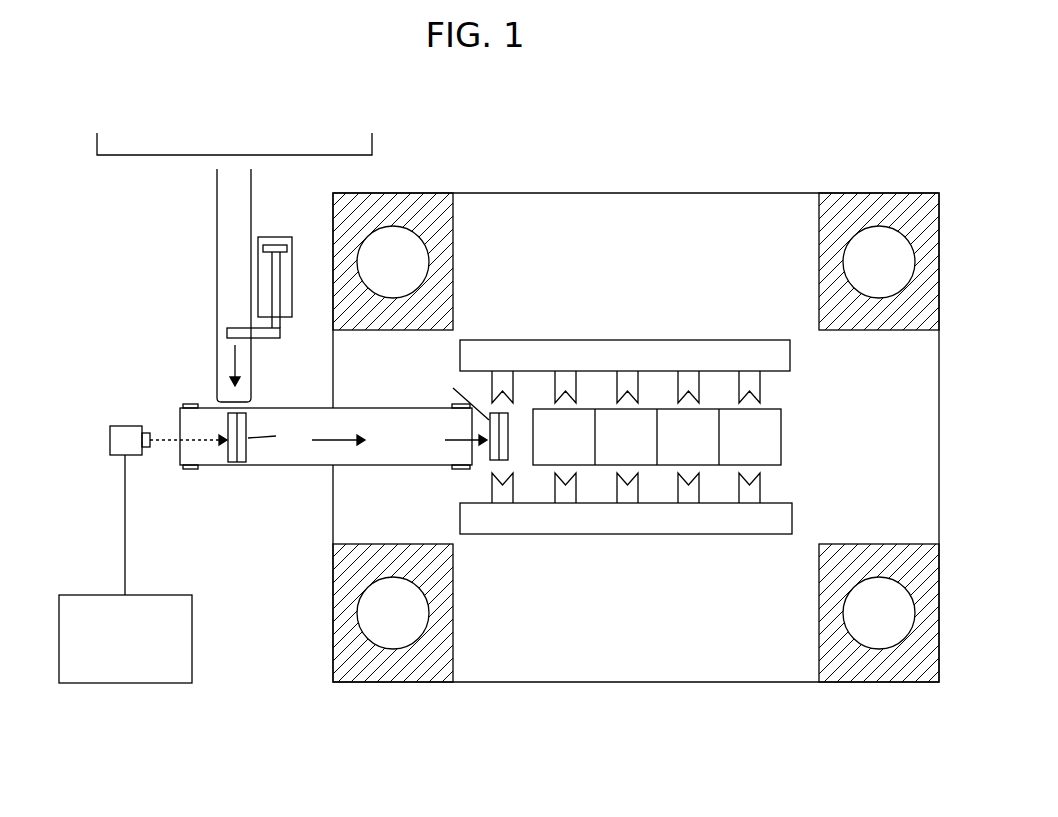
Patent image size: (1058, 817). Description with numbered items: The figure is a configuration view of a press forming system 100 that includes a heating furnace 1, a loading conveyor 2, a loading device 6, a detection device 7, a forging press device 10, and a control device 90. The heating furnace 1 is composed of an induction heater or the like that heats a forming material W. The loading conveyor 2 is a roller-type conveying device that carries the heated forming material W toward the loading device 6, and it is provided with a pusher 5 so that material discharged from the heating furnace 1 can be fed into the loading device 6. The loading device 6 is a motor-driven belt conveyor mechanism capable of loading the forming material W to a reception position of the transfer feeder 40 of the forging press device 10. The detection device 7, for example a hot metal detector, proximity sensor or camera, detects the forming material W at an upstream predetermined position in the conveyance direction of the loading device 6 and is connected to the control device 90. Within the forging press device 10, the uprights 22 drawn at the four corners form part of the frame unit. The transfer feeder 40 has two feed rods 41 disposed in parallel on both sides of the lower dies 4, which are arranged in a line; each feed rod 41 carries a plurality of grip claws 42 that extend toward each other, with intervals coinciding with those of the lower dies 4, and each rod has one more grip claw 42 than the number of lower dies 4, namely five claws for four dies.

The heating furnace 1 is at (135, 157).
The loading conveyor 2 is at (252, 200).
The lower dies 4 is at (598, 388).
The pusher 5 is at (290, 317).
The loading device 6 is at (280, 465).
The detection device 7 is at (127, 425).
The forging press device 10 is at (575, 193).
The uprights 22 is at (437, 194).
The transfer feeder 40 is at (612, 424).
The feed rods 41 is at (638, 340).
The grip claws 42 is at (698, 397).
The control device 90 is at (192, 622).
The press forming system 100 is at (820, 132).